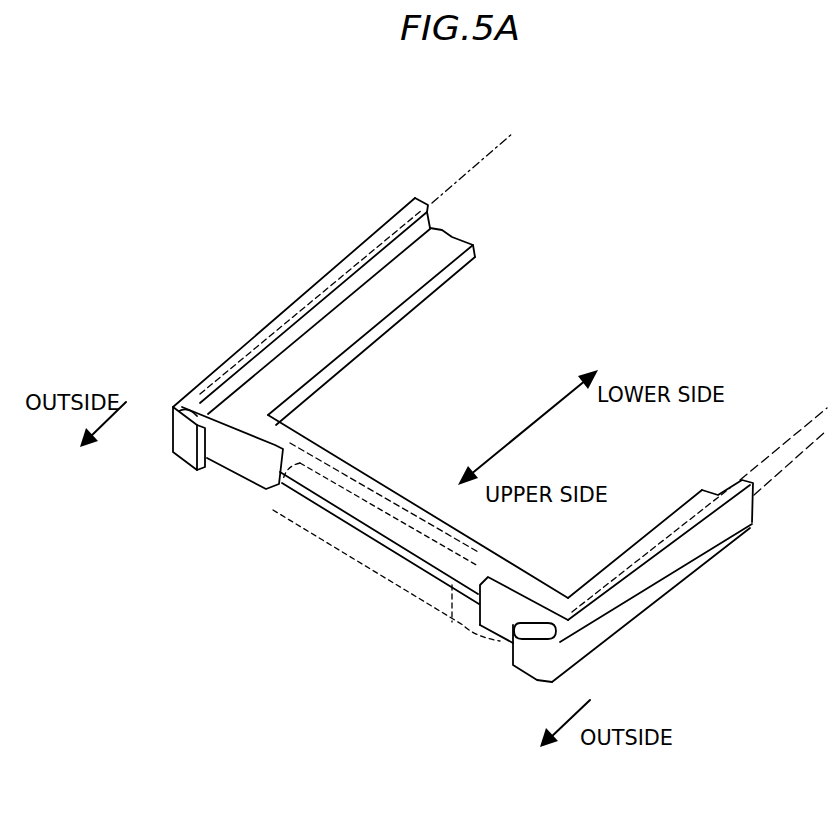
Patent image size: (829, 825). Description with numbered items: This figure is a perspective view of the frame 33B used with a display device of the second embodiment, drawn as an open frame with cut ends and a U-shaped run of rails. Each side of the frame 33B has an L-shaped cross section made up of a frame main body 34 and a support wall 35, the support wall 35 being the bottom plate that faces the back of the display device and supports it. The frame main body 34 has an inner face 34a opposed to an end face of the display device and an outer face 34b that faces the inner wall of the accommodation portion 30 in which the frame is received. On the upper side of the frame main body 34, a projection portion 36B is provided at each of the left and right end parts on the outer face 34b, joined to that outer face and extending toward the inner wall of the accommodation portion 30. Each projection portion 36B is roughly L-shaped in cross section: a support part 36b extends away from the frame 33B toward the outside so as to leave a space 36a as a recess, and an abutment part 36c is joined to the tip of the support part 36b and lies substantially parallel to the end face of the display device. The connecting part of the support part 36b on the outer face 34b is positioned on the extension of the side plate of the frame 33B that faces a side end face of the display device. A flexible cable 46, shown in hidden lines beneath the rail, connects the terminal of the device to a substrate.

The accommodation portion 30 is at (485, 408).
The frame 33B is at (298, 265).
The frame main body 34 is at (427, 116).
The inner face 34a is at (392, 238).
The outer face 34b is at (351, 252).
The support wall 35 is at (397, 285).
The projection portion 36B is at (163, 590).
The space 36a is at (210, 450).
The support part 36b is at (569, 662).
The abutment part 36c is at (200, 447).
The flexible cable 46 is at (382, 574).